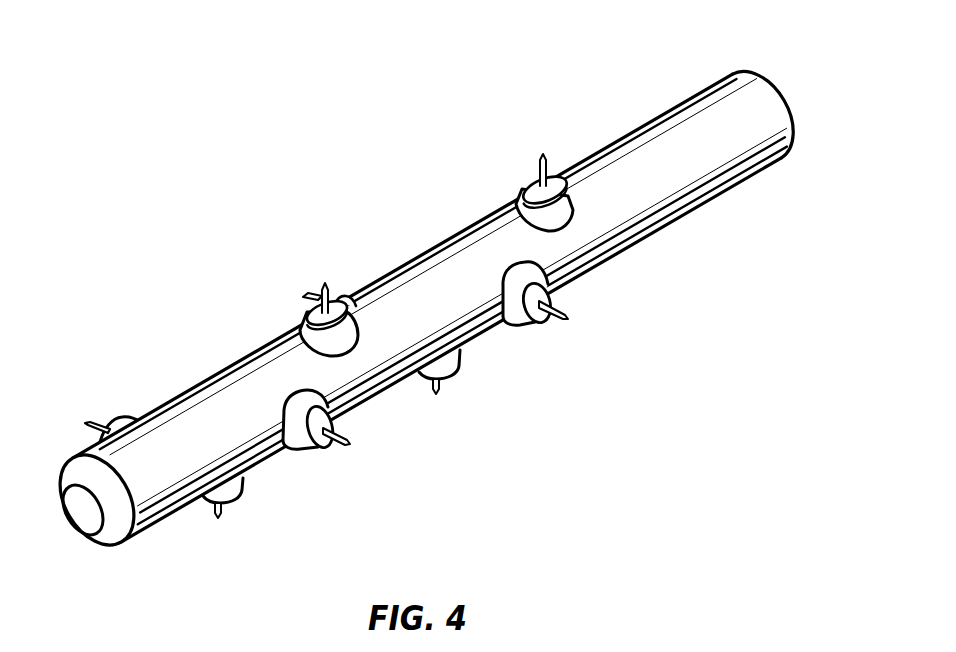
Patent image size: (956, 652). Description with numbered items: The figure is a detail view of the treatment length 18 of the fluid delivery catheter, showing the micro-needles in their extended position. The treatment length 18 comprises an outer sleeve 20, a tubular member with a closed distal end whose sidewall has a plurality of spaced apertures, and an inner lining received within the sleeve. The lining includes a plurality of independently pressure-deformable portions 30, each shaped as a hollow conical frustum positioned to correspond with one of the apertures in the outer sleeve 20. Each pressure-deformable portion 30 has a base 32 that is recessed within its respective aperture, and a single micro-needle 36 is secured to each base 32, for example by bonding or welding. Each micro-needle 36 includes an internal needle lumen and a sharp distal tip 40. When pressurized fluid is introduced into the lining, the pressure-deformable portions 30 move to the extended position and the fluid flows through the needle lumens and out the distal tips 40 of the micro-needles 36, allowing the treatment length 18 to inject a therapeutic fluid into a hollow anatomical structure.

The treatment length 18 is at (294, 168).
The outer sleeve 20 is at (713, 148).
The pressure-deformable portion 30 is at (558, 210).
The base 32 is at (554, 176).
The micro-needle 36 is at (540, 176).
The sharp distal tip 40 is at (347, 448).